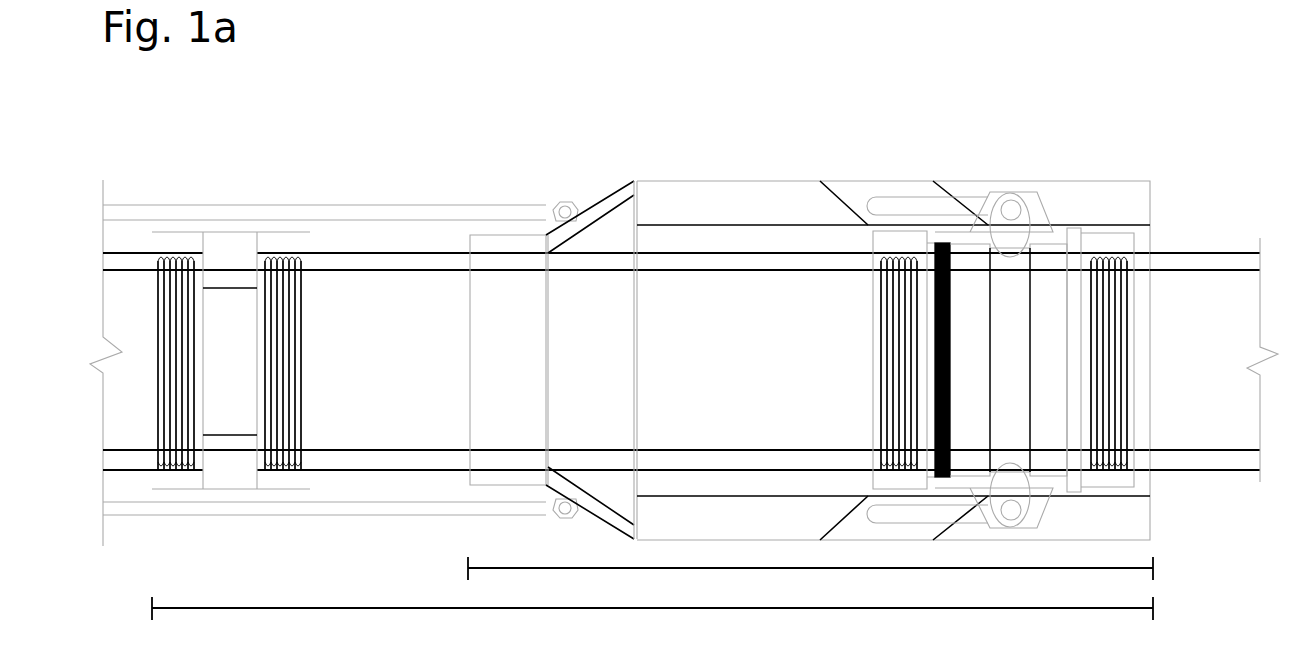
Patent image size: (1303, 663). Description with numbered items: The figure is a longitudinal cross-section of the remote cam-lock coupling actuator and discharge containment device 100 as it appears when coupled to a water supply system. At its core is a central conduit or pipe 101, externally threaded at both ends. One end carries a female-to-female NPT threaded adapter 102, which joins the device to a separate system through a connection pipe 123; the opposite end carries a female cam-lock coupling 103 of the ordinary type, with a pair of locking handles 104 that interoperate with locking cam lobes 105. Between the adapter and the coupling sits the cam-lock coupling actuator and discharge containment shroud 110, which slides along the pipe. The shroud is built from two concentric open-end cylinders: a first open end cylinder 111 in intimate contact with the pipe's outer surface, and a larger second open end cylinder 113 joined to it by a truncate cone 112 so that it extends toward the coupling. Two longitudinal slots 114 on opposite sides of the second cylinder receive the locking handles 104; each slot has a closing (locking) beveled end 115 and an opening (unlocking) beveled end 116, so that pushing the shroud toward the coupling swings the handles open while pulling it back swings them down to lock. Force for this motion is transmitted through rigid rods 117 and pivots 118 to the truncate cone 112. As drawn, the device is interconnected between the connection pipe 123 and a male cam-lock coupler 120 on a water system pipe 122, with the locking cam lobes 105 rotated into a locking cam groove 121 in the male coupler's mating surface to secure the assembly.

The remote cam-lock coupling actuator and discharge containment device 100 is at (652, 620).
The central conduit or pipe 101 is at (392, 251).
The female-to-female NPT threaded adapter 102 is at (229, 230).
The female cam-lock coupling 103 is at (957, 233).
The locking handles 104 is at (906, 229).
The locking cam lobes 105 is at (1012, 190).
The cam-lock coupling actuator and discharge containment shroud 110 is at (810, 579).
The first open end cylinder 111 is at (507, 233).
The truncate cone 112 is at (608, 196).
The second open end cylinder 113 is at (713, 179).
The longitudinal slots 114 is at (860, 194).
The closing (locking) beveled end 115 is at (943, 183).
The opening (unlocking) beveled end 116 is at (845, 202).
The rigid rods 117 is at (190, 203).
The pivots 118 is at (571, 200).
The male cam-lock coupler 120 is at (1110, 232).
The locking cam groove 121 is at (998, 250).
The water system pipe 122 is at (1203, 252).
The connection pipe 123 is at (136, 250).